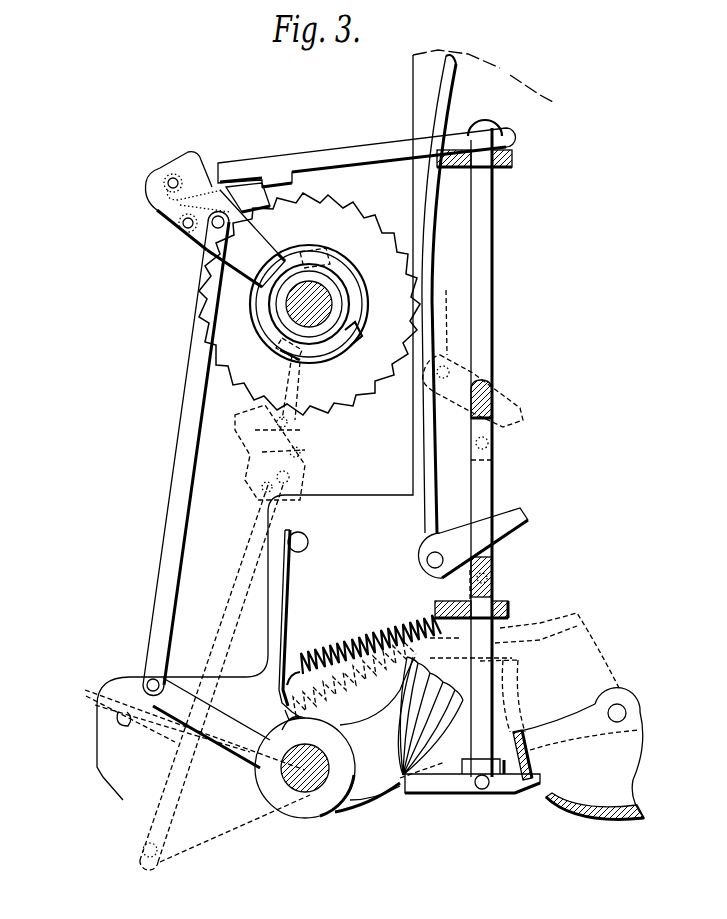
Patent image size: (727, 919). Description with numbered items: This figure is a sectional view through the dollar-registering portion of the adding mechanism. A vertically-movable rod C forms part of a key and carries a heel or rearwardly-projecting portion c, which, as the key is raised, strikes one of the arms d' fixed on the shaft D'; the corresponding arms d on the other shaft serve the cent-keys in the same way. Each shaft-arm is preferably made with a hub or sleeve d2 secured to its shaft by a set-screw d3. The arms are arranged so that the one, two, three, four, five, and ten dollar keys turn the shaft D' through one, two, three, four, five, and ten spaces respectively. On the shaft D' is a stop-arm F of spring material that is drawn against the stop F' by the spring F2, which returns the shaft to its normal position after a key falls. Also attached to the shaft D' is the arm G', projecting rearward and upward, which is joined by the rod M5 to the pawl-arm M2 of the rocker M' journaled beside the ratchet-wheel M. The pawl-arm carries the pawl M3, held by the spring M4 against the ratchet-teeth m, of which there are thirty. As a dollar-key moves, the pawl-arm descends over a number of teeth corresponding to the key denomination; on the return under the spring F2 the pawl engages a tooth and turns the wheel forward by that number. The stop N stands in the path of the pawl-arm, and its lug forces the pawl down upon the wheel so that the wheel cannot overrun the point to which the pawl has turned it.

The ratchet-wheel M is at (309, 304).
The rocker M' is at (324, 304).
The pawl-arm M2 is at (246, 238).
The pawl M3 is at (243, 195).
The spring M4 is at (170, 204).
The rod M5 is at (184, 451).
The stop N is at (283, 178).
The ratchet-teeth m is at (356, 216).
The vertically-movable rods C is at (488, 306).
The stop-arm F is at (296, 625).
The stop F' is at (311, 539).
The spring F2 is at (356, 642).
The arm G' is at (211, 723).
The shaft D' is at (305, 781).
The arms d is at (430, 716).
The arms d' is at (375, 734).
The hub or sleeve d2 is at (322, 802).
The set-screw d3 is at (296, 716).
The heel or rearwardly-projecting portion c is at (425, 790).